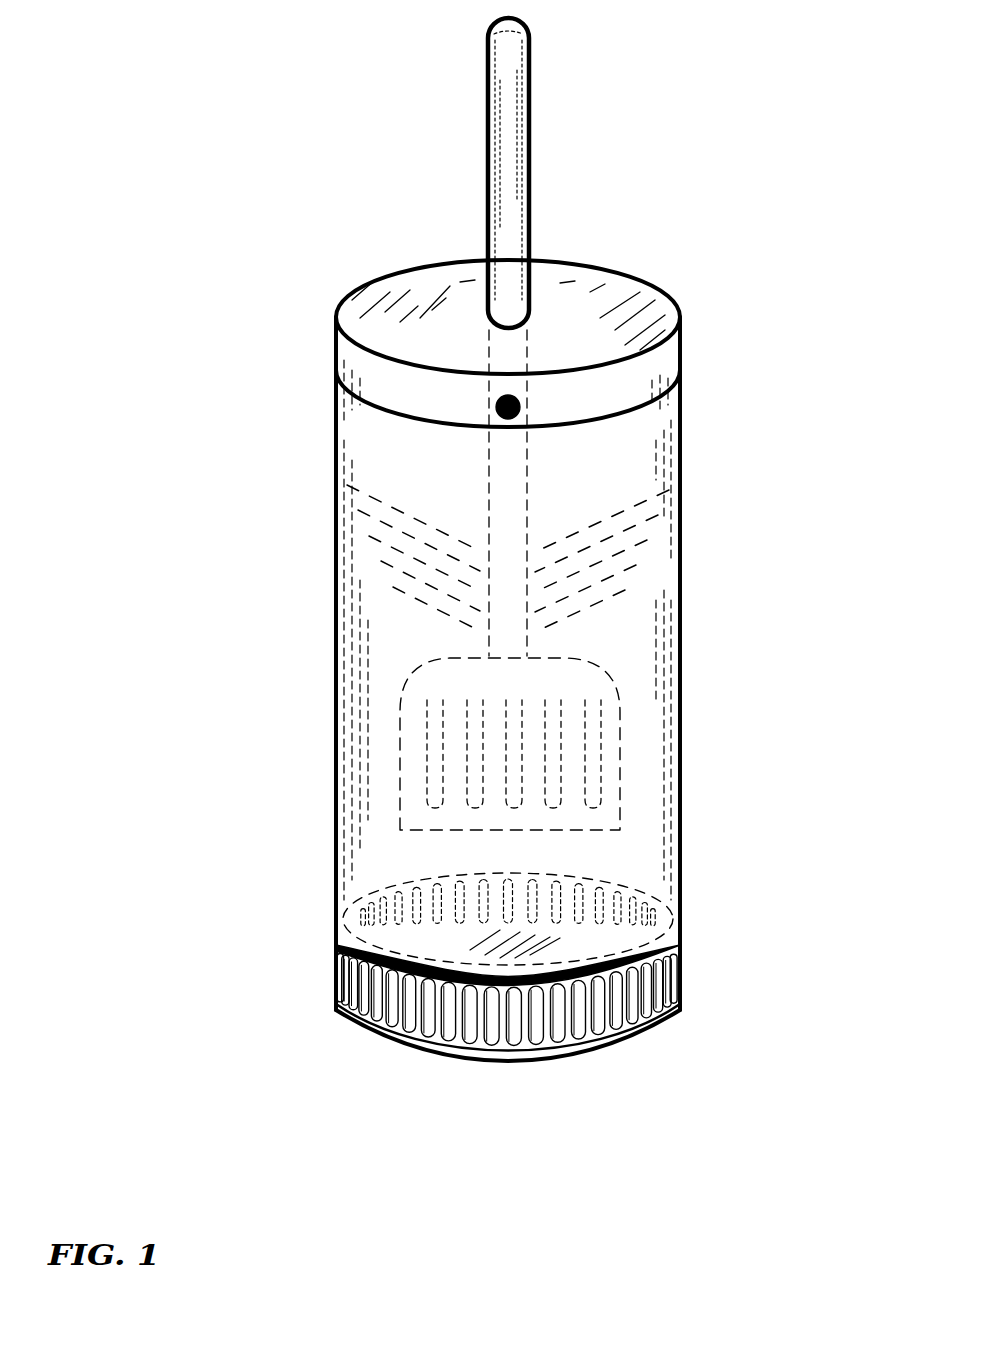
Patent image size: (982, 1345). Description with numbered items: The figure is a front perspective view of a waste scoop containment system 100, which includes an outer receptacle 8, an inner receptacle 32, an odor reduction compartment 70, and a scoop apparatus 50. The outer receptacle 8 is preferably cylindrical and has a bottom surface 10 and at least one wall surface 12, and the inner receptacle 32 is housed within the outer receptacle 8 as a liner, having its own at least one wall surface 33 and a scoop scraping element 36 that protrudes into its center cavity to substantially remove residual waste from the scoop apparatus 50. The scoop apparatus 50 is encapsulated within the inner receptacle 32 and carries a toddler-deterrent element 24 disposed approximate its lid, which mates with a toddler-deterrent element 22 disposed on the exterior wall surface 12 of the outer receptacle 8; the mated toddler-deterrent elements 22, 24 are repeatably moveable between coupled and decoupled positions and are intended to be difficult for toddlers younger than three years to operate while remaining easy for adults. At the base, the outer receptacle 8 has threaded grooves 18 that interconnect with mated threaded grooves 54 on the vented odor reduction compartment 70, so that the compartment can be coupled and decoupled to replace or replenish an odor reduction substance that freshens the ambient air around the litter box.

The waste scoop containment system 100 is at (233, 133).
The outer receptacle 8 is at (681, 453).
The bottom surface 10 is at (350, 903).
The wall surface 12 is at (377, 655).
The threaded grooves 18 is at (680, 977).
The threaded grooves 54 is at (508, 1027).
The toddler-deterrent element 22 is at (520, 409).
The toddler-deterrent element 24 is at (519, 395).
The inner receptacle 32 is at (336, 697).
The wall surface 33 is at (673, 612).
The scoop scraping element 36 is at (400, 511).
The scoop apparatus 50 is at (430, 740).
The odor reduction compartment 70 is at (518, 1032).